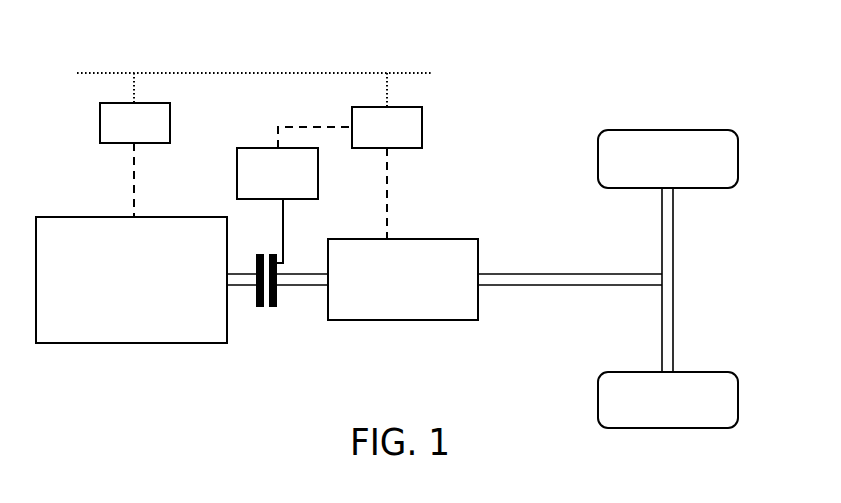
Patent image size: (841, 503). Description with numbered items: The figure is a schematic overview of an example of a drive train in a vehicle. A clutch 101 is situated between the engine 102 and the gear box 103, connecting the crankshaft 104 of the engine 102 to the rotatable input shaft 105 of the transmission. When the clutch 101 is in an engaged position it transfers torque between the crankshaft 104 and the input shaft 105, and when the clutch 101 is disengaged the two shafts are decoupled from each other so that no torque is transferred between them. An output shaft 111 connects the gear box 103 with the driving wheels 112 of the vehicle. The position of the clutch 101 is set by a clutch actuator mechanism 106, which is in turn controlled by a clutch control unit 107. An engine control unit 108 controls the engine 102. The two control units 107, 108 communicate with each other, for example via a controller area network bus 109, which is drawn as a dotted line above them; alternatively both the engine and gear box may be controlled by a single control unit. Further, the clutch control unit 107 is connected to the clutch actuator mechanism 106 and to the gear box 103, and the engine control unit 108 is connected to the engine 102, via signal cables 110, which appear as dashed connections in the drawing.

The clutch 101 is at (266, 308).
The engine 102 is at (131, 280).
The gear box 103 is at (403, 279).
The crankshaft 104 is at (243, 285).
The input shaft 105 is at (303, 288).
The clutch actuator mechanism 106 is at (277, 205).
The clutch control unit 107 is at (387, 127).
The engine control unit 108 is at (135, 123).
The controller area network (CAN) bus 109 is at (232, 73).
The signal cables 110 is at (135, 198).
The output shaft 111 is at (547, 285).
The driving wheels 112 is at (692, 170).